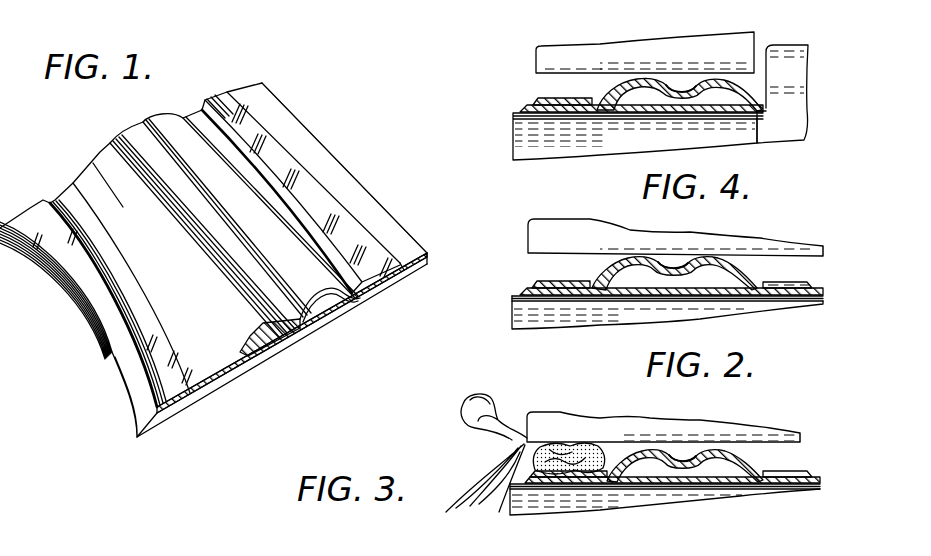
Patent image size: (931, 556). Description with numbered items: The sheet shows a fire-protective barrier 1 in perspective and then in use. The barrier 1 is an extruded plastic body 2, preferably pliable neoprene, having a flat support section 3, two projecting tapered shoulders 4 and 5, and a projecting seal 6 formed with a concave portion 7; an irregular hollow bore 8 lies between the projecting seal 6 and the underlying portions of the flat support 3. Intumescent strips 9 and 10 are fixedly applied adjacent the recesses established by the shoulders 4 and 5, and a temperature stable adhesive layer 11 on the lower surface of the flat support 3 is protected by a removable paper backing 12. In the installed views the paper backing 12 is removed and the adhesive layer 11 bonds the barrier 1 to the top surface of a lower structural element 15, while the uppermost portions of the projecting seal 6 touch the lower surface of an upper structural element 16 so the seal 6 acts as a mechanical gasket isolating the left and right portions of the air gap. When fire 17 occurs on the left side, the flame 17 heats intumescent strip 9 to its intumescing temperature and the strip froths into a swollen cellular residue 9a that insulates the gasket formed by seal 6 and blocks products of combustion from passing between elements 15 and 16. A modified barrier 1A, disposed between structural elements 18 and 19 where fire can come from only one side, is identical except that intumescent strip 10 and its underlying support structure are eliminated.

In FIG. 1, the protective barrier 1 is at (313, 124).
In FIG. 2, the protective barrier 1 is at (773, 270).
In FIG. 3, the protective barrier 1 is at (784, 462).
In FIG. 4, the modified protective barrier 1A is at (545, 91).
In FIG. 1, the extruded plastic body 2 is at (167, 418).
In FIG. 4, the extruded plastic body 2 is at (632, 110).
In FIG. 2, the extruded plastic body 2 is at (623, 292).
In FIG. 3, the extruded plastic body 2 is at (613, 483).
In FIG. 1, the flat support section 3 is at (313, 328).
In FIG. 1, the projecting tapered shoulder 4 is at (115, 339).
In FIG. 1, the projecting tapered shoulder 5 is at (340, 178).
In FIG. 1, the projecting seal 6 is at (181, 117).
In FIG. 4, the projecting seal 6 is at (630, 83).
In FIG. 2, the projecting seal 6 is at (623, 265).
In FIG. 3, the projecting seal 6 is at (633, 447).
In FIG. 1, the concave portion 7 is at (323, 291).
In FIG. 4, the concave portion 7 is at (680, 90).
In FIG. 2, the concave portion 7 is at (672, 266).
In FIG. 3, the concave portion 7 is at (680, 460).
In FIG. 1, the irregular hollow bore 8 is at (263, 354).
In FIG. 1, the intumescent strip 9 is at (46, 200).
In FIG. 4, the intumescent strip 9 is at (557, 100).
In FIG. 2, the intumescent strip 9 is at (573, 280).
In FIG. 3, the intumescent strip 9 is at (587, 463).
In FIG. 3, the cellular residue 9a is at (563, 447).
In FIG. 1, the intumescent strip 10 is at (221, 94).
In FIG. 2, the intumescent strip 10 is at (790, 277).
In FIG. 3, the intumescent strip 10 is at (800, 468).
In FIG. 1, the adhesive layer 11 is at (425, 258).
In FIG. 4, the adhesive layer 11 is at (730, 113).
In FIG. 2, the adhesive layer 11 is at (717, 295).
In FIG. 3, the adhesive layer 11 is at (687, 485).
In FIG. 1, the paper backing 12 is at (135, 402).
In FIG. 2, the structural element 15 is at (538, 310).
In FIG. 3, the structural element 15 is at (763, 487).
In FIG. 2, the structural element 16 is at (550, 227).
In FIG. 3, the structural element 16 is at (750, 433).
In FIG. 3, the fire 17 is at (463, 483).
In FIG. 4, the structural element 18 is at (650, 25).
In FIG. 4, the structural element 19 is at (772, 117).